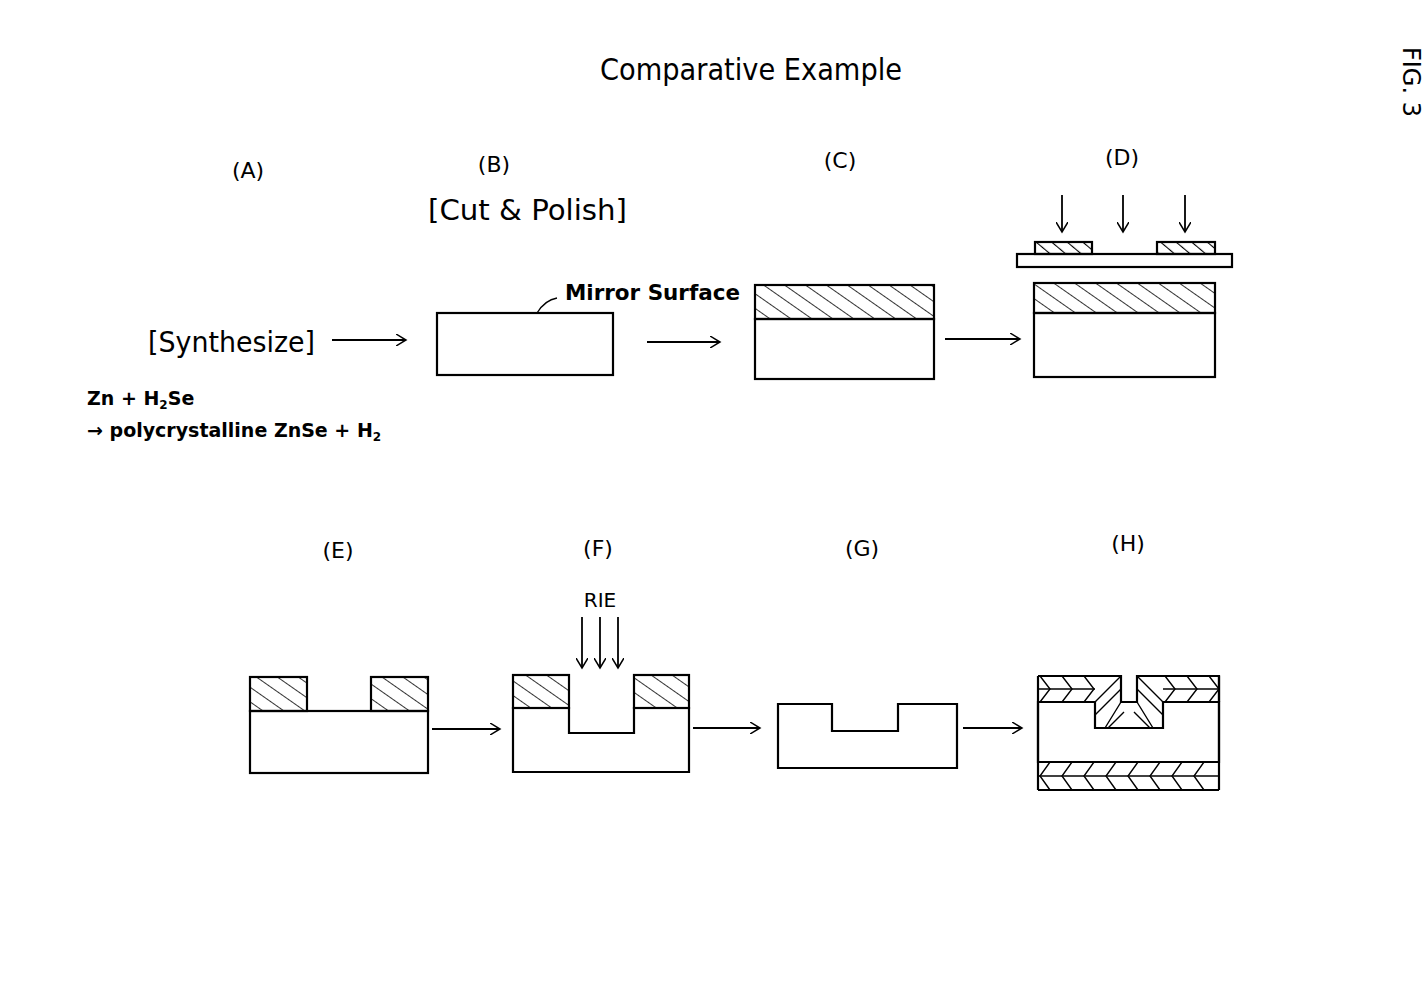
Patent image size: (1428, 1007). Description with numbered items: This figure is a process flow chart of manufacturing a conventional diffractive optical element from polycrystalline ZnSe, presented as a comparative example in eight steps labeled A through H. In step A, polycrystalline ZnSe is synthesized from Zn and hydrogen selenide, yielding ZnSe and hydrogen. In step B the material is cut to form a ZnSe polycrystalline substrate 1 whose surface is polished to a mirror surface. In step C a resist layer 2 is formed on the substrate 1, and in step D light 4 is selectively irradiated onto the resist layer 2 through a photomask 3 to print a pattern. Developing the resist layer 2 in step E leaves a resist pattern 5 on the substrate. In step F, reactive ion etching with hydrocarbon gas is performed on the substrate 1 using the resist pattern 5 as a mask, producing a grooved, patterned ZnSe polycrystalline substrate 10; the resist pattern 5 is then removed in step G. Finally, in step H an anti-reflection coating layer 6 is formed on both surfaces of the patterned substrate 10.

The ZnSe polycrystalline substrate 1 is at (591, 348).
The resist layer 2 is at (909, 300).
The photomask 3 is at (1222, 257).
The light 4 is at (1187, 200).
The resist pattern 5 is at (402, 688).
The anti-reflection coating layer 6 is at (1224, 687).
The patterned ZnSe polycrystalline substrate 10 is at (403, 745).